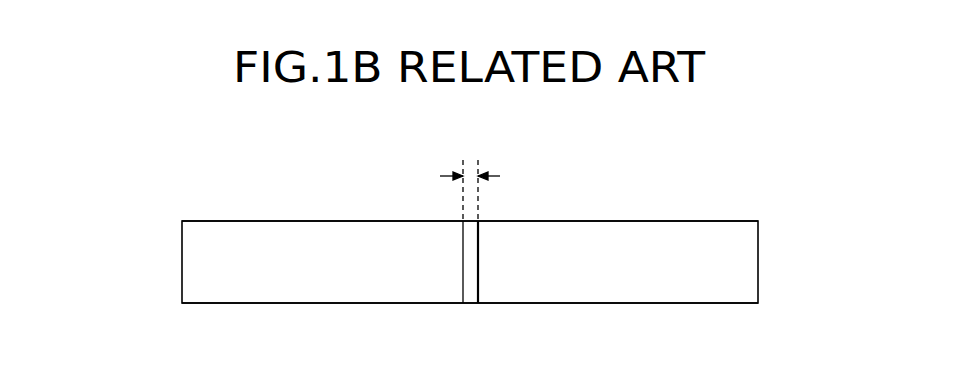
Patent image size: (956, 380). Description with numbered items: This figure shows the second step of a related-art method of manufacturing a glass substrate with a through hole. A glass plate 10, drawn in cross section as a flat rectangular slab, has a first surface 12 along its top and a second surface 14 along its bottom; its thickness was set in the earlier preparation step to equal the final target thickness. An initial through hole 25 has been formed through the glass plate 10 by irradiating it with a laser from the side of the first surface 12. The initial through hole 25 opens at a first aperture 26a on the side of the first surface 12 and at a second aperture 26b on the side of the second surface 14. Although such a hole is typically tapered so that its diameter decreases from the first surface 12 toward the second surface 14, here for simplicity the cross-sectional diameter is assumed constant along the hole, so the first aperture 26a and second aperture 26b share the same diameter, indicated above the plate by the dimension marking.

The glass plate 10 is at (758, 259).
The first surface 12 is at (307, 220).
The second surface 14 is at (305, 305).
The initial through hole 25 is at (480, 262).
The first aperture 26a is at (472, 220).
The second aperture 26b is at (471, 303).